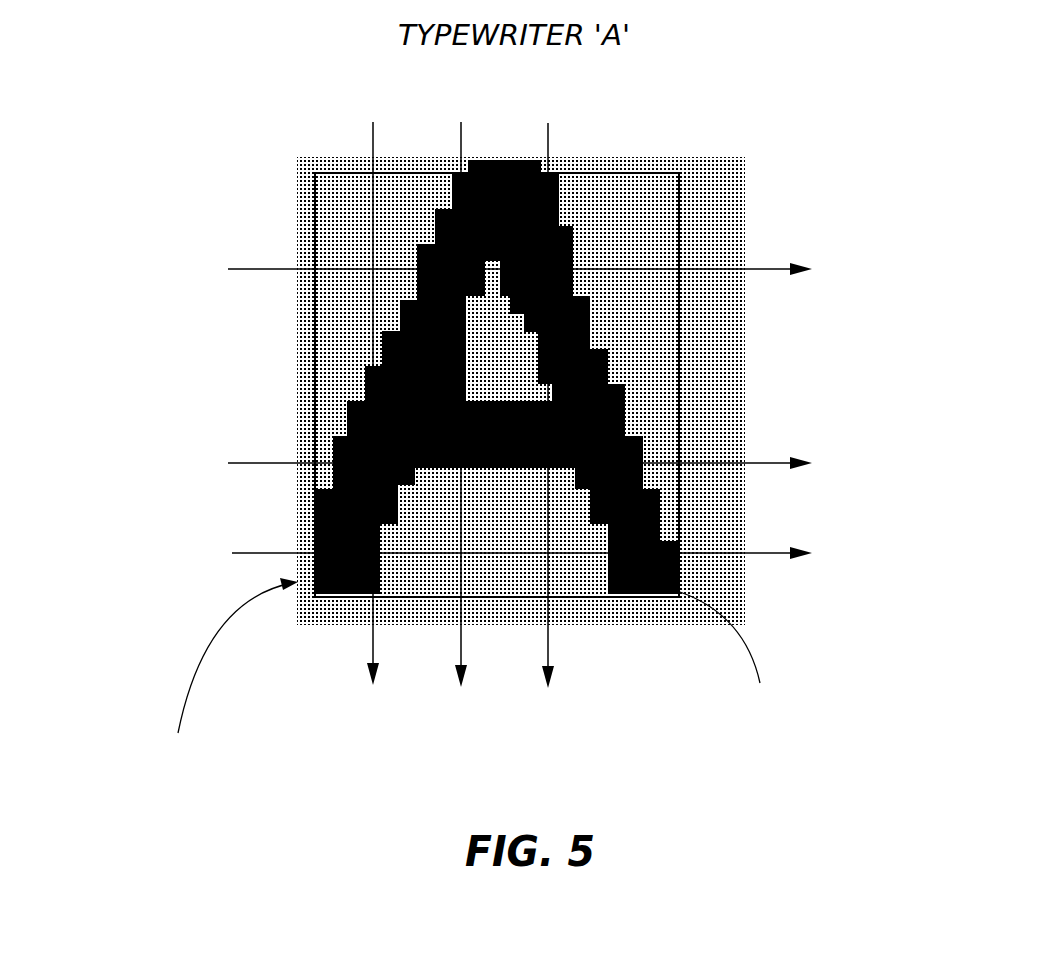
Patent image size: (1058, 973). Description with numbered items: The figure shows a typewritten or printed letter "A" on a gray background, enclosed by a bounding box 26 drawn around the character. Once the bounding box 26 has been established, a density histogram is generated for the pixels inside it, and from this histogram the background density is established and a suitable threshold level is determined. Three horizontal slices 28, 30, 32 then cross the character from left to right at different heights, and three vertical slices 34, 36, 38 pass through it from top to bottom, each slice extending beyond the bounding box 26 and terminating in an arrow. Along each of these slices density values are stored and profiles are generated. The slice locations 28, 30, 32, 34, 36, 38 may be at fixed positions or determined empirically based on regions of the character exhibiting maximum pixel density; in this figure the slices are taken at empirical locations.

The bounding box 26 is at (315, 357).
The horizontal slice 28 is at (766, 270).
The horizontal slice 30 is at (770, 464).
The horizontal slice 32 is at (770, 556).
The vertical slice 34 is at (372, 640).
The vertical slice 36 is at (461, 640).
The vertical slice 38 is at (548, 640).